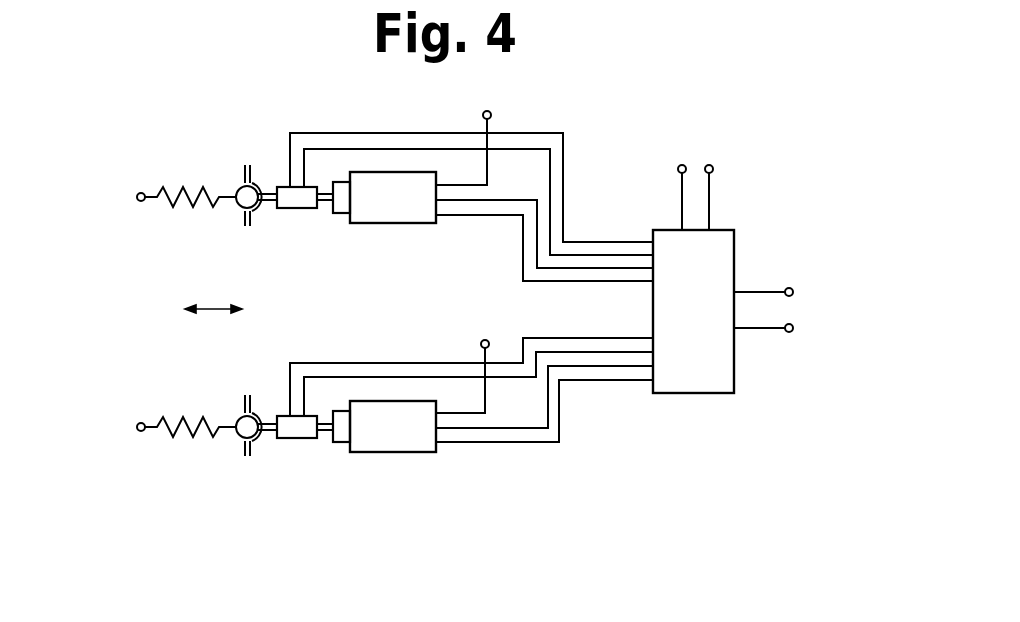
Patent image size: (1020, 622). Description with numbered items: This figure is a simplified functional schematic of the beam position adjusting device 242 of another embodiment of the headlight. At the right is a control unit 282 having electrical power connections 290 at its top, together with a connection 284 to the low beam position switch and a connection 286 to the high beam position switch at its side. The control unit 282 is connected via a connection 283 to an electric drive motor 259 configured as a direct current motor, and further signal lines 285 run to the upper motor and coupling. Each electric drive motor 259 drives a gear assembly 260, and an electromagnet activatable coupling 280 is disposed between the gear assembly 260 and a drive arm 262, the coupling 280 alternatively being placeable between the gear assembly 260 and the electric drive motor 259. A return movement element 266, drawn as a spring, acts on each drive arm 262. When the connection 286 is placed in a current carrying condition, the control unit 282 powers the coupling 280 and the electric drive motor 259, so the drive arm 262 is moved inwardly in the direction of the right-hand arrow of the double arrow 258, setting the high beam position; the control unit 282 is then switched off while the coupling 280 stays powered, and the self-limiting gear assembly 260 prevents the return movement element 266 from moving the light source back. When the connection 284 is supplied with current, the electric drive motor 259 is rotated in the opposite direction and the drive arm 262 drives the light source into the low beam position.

The beam position adjusting device 242 is at (547, 463).
The double arrow 258 is at (212, 309).
The electric drive motor 259 is at (408, 223).
The gear assembly 260 is at (325, 213).
The drive arm 262 is at (270, 204).
The return movement element 266 is at (158, 192).
The electromagnet activatable coupling 280 is at (283, 192).
The control unit 282 is at (703, 393).
The connection 283 is at (580, 282).
The connection to the low beam position switch 284 is at (794, 291).
The signal lines 285 is at (530, 150).
The connection to the high beam position switch 286 is at (794, 329).
The electrical power connections 290 is at (709, 165).